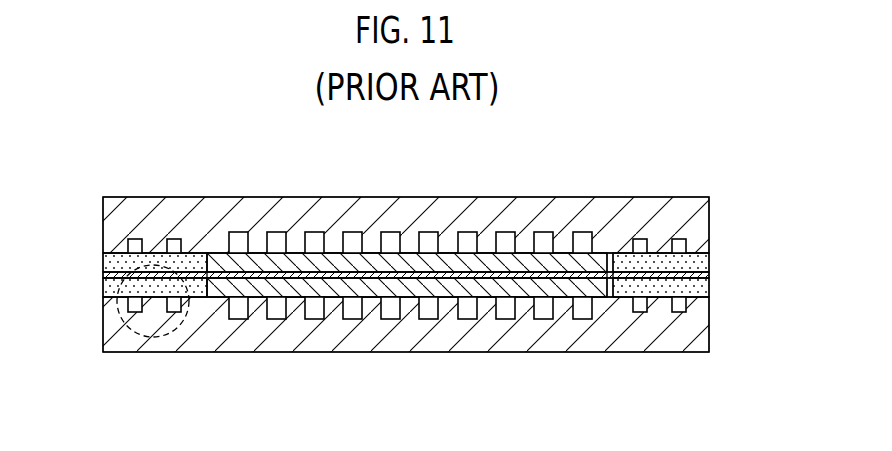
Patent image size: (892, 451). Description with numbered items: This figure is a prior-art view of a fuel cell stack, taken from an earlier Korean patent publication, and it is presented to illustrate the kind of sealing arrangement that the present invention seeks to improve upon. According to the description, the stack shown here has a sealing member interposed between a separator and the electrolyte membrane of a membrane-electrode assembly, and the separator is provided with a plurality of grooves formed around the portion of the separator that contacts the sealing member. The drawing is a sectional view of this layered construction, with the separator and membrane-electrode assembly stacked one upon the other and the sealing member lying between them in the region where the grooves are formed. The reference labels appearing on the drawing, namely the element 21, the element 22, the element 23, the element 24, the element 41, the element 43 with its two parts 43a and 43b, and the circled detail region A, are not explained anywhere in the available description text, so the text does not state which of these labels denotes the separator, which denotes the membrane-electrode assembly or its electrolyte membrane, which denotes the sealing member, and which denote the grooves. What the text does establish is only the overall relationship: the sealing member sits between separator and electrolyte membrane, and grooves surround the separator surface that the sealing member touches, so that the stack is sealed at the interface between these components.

The core substrate 21 is at (709, 275).
The inner circuit layer 22 is at (542, 278).
The insulating layer 23 is at (688, 287).
The build-up insulating layer 24 is at (364, 212).
The circuit pattern pads 41 is at (241, 232).
The bonding pads 43 is at (399, 277).
The first bonding pad 43a is at (134, 238).
The second bonding pad 43b is at (174, 238).
The enlarged region A is at (122, 320).